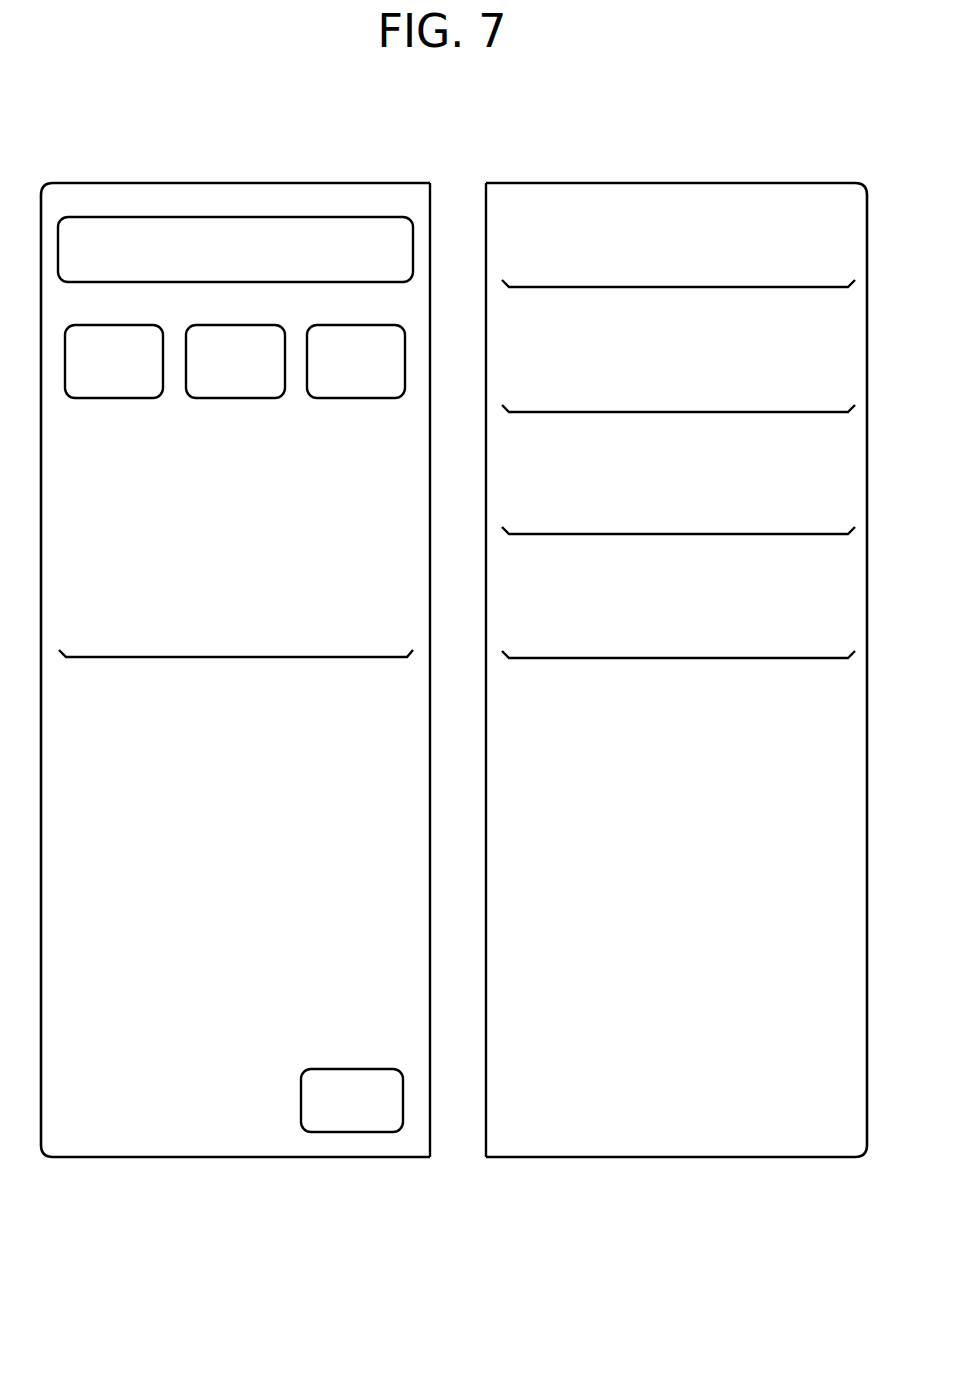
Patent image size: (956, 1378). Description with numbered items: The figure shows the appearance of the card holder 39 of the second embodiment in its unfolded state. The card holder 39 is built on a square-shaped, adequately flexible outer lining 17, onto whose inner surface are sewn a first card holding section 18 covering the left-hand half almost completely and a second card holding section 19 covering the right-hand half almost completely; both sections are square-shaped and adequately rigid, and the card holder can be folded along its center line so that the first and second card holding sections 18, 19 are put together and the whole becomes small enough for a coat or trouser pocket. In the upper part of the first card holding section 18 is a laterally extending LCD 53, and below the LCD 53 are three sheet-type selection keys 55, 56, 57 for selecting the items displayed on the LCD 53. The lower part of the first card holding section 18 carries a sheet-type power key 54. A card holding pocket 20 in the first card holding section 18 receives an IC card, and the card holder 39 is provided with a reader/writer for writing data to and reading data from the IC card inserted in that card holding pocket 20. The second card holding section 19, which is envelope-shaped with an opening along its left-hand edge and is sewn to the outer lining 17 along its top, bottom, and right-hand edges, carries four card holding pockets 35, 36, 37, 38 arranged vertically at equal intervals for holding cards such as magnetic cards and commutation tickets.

The card holder 39 is at (110, 143).
The first card holding section 18 is at (242, 202).
The outer lining 17 is at (457, 182).
The second card holding section 19 is at (657, 207).
The LCD 53 is at (347, 232).
The selection key 55 is at (113, 387).
The selection key 56 is at (240, 387).
The selection key 57 is at (360, 387).
The card holding pocket 20 is at (288, 672).
The card holding pocket 35 is at (742, 298).
The card holding pocket 36 is at (742, 422).
The card holding pocket 37 is at (742, 554).
The card holding pocket 38 is at (742, 678).
The power key 54 is at (337, 1123).